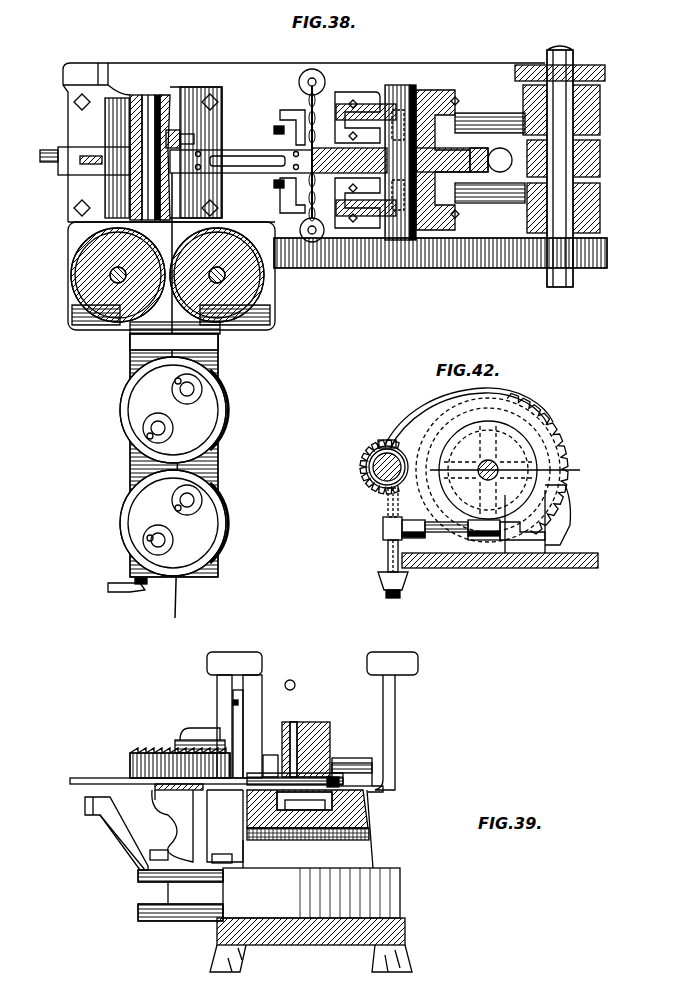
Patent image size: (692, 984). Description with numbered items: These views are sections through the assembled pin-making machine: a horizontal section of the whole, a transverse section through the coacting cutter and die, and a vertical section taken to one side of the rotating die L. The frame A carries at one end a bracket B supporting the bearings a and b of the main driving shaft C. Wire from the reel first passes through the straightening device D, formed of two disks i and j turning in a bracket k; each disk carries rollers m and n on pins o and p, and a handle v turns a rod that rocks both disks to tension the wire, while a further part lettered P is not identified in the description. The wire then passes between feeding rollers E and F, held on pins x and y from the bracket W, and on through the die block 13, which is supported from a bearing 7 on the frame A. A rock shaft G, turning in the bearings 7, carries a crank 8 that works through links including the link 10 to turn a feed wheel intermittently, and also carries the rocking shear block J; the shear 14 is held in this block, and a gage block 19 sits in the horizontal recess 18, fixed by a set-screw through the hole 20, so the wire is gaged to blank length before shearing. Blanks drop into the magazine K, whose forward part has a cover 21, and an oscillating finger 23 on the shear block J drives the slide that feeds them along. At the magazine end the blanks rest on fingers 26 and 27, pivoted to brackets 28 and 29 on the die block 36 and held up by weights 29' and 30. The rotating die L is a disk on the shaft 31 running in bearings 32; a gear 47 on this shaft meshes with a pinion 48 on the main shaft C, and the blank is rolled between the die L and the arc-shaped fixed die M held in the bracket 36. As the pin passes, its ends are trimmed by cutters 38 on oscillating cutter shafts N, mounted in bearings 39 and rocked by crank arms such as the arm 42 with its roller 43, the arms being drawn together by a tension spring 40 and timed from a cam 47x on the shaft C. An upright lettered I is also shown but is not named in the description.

In FIG. 38, the bearing 7 is at (136, 97).
In FIG. 39, the bearing 7 is at (345, 760).
In FIG. 38, the gage block 19 is at (163, 100).
In FIG. 39, the gage block 19 is at (366, 812).
In FIG. 38, the hole 20 is at (188, 100).
In FIG. 38, the rocking shear block J is at (130, 152).
In FIG. 39, the rocking shear block J is at (312, 726).
In FIG. 38, the oscillating finger 23 is at (85, 160).
In FIG. 38, the cover 21 is at (260, 150).
In FIG. 38, the die block 13 is at (180, 150).
In FIG. 39, the die block 13 is at (268, 772).
In FIG. 38, the weight 29' is at (301, 64).
In FIG. 38, the bracket 29 is at (285, 229).
In FIG. 38, the bracket 28 is at (282, 115).
In FIG. 38, the finger 27 is at (280, 192).
In FIG. 38, the weight 30 is at (312, 262).
In FIG. 38, the finger 26 is at (335, 105).
In FIG. 38, the die block 36 is at (359, 202).
In FIG. 38, the shaft 31 is at (400, 95).
In FIG. 42, the shaft 31 is at (496, 464).
In FIG. 38, the bearing 32 is at (425, 100).
In FIG. 38, the rotating die L is at (470, 172).
In FIG. 42, the rotating die L is at (580, 472).
In FIG. 38, the cutter shaft N is at (482, 120).
In FIG. 42, the cutter shaft N is at (446, 537).
In FIG. 38, the bearing a is at (600, 112).
In FIG. 42, the bearing a is at (370, 462).
In FIG. 38, the cam 47x is at (600, 157).
In FIG. 38, the bearing b is at (600, 203).
In FIG. 38, the main driving shaft C is at (560, 92).
In FIG. 42, the main driving shaft C is at (374, 482).
In FIG. 38, the pinion 48 is at (590, 256).
In FIG. 42, the pinion 48 is at (362, 462).
In FIG. 38, the gear 47 is at (351, 291).
In FIG. 42, the gear 47 is at (550, 446).
In FIG. 38, the feeding roller E is at (100, 296).
In FIG. 39, the feeding roller E is at (175, 772).
In FIG. 38, the pin y is at (110, 276).
In FIG. 38, the feeding roller F is at (250, 300).
In FIG. 38, the pin x is at (222, 326).
In FIG. 38, the straightening device D is at (140, 455).
In FIG. 38, the bracket k is at (135, 362).
In FIG. 39, the bracket k is at (98, 810).
In FIG. 38, the pulley wheel P is at (210, 413).
In FIG. 38, the roller m is at (200, 392).
In FIG. 38, the pin o is at (158, 418).
In FIG. 38, the pin p is at (185, 396).
In FIG. 38, the disk i is at (145, 412).
In FIG. 38, the disk j is at (138, 508).
In FIG. 38, the roller n is at (150, 442).
In FIG. 38, the handle v is at (108, 586).
In FIG. 42, the frame A is at (522, 568).
In FIG. 39, the frame A is at (225, 945).
In FIG. 42, the bracket B is at (383, 513).
In FIG. 42, the crank arm 42 is at (388, 556).
In FIG. 42, the roller 43 is at (402, 596).
In FIG. 42, the bearing 39 is at (415, 540).
In FIG. 42, the tension spring 40 is at (478, 522).
In FIG. 42, the cutter 38 is at (510, 534).
In FIG. 42, the fixed die M is at (565, 510).
In FIG. 39, the magazine K is at (258, 815).
In FIG. 39, the bracket W is at (158, 810).
In FIG. 39, the link 10 is at (196, 730).
In FIG. 39, the crank 8 is at (233, 716).
In FIG. 39, the post I is at (395, 701).
In FIG. 39, the shear 14 is at (293, 726).
In FIG. 39, the horizontal recess 18 is at (340, 778).
In FIG. 39, the rock shaft G is at (383, 790).